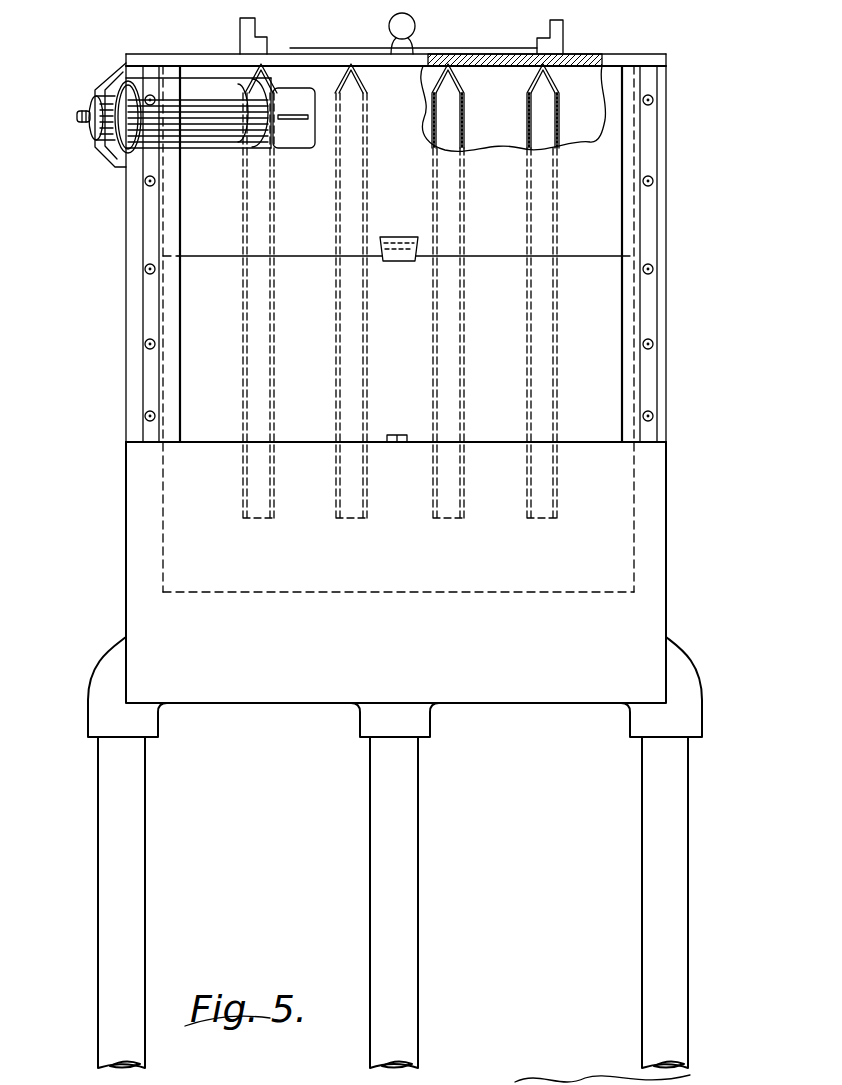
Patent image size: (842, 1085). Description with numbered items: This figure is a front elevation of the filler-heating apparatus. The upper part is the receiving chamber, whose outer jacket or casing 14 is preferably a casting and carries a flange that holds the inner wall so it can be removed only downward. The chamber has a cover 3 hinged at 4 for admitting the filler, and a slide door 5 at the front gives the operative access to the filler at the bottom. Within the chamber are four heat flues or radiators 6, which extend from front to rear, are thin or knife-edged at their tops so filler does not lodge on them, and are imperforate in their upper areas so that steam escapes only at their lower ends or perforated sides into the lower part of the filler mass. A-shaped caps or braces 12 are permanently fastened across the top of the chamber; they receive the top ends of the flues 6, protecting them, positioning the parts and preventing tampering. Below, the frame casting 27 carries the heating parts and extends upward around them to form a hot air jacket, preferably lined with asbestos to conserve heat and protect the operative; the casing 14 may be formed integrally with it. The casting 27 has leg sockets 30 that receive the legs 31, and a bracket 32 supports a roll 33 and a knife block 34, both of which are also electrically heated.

The cover 3 is at (580, 63).
The hinge 4 is at (497, 36).
The slide door 5 is at (396, 248).
The heat flues 6 is at (272, 392).
The A-shaped caps 12 is at (345, 62).
The outer jacket 14 is at (400, 326).
The frame casting 27 is at (396, 384).
The leg sockets 30 is at (412, 714).
The legs 31 is at (422, 772).
The bracket 32 is at (95, 80).
The roll 33 is at (190, 87).
The knife block 34 is at (298, 150).